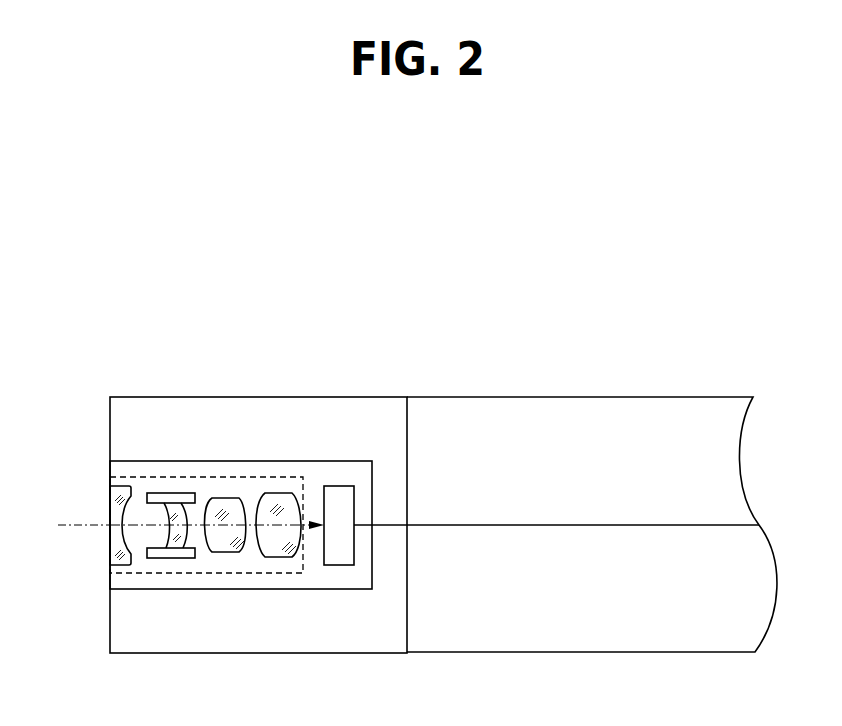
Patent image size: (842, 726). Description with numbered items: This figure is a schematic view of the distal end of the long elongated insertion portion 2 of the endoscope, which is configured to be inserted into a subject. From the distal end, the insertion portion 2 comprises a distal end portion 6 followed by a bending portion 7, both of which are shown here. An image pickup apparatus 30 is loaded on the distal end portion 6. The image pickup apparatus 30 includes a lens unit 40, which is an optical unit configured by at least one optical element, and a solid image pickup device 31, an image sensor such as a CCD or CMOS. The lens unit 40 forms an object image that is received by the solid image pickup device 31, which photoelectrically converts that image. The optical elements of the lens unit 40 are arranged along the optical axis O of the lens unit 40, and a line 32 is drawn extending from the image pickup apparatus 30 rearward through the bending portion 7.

The insertion portion 2 is at (469, 341).
The distal end portion 6 is at (407, 388).
The bending portion 7 is at (753, 388).
The image pickup apparatus 30 is at (249, 461).
The solid image pickup device 31 is at (335, 567).
The signal cable 32 is at (577, 527).
The lens unit 40 is at (199, 575).
The optical axis O is at (182, 526).